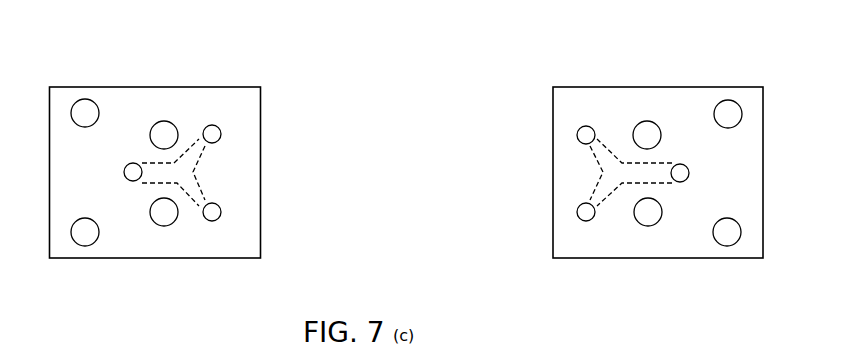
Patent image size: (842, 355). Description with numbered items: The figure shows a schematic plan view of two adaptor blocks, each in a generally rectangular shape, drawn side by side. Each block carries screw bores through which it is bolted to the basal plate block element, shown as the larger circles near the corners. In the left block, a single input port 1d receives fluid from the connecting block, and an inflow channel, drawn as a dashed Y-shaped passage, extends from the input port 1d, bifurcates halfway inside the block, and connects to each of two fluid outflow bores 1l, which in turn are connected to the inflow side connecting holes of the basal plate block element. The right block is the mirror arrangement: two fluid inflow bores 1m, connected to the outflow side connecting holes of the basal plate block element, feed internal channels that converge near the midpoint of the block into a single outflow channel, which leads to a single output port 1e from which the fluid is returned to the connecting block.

The fluid outflow bore 1l is at (212, 125).
The input port 1d is at (124, 173).
The fluid inflow bore 1m is at (586, 126).
The output port 1e is at (689, 173).